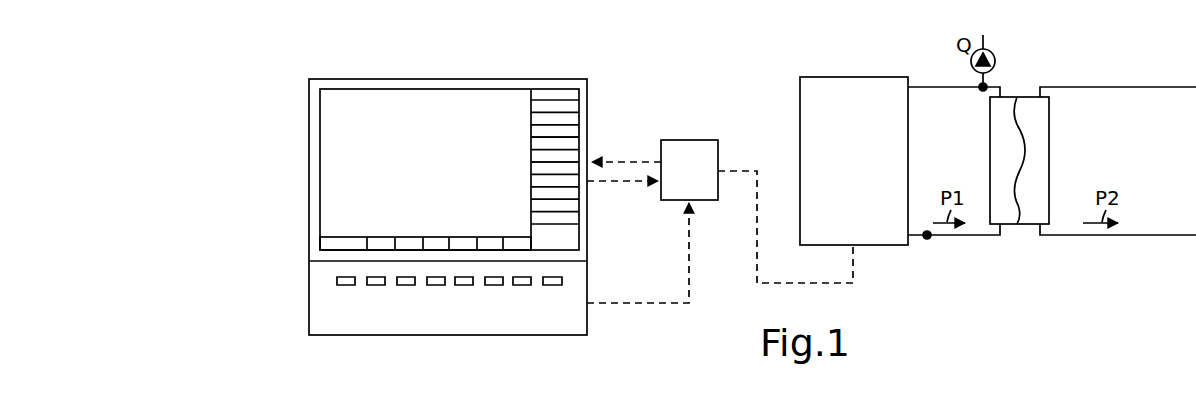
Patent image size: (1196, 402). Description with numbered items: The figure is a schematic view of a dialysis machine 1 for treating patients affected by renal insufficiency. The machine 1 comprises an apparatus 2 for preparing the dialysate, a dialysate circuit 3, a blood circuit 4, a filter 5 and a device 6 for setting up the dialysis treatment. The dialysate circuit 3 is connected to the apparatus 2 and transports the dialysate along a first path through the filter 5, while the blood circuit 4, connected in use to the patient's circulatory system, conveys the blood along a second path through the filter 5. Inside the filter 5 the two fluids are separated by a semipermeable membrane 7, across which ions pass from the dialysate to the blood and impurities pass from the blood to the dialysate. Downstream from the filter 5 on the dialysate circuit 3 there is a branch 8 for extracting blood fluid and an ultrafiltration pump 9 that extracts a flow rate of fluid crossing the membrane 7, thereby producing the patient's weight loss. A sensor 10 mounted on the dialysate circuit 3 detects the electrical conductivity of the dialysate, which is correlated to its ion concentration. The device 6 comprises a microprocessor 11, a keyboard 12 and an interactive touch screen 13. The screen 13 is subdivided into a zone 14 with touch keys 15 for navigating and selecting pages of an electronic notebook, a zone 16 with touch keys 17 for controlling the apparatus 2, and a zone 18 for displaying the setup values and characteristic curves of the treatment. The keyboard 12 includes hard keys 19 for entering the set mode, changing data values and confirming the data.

The dialysis machine 1 is at (676, 85).
The apparatus for preparing the dialysate 2 is at (803, 107).
The dialysate circuit 3 is at (925, 87).
The blood circuit 4 is at (1120, 87).
The filter 5 is at (998, 120).
The device for setting up the dialysis treatment 6 is at (622, 328).
The semipermeable membrane 7 is at (1020, 157).
The branch 8 is at (990, 84).
The ultrafiltration pump 9 is at (995, 63).
The sensor 10 is at (928, 240).
The microprocessor 11 is at (682, 168).
The keyboard 12 is at (327, 313).
The screen 13 is at (300, 181).
The zone 14 is at (394, 236).
The touch keys 15 is at (377, 247).
The zone 16 is at (547, 128).
The touch keys 17 is at (560, 182).
The zone 18 is at (437, 128).
The hard keys 19 is at (376, 285).